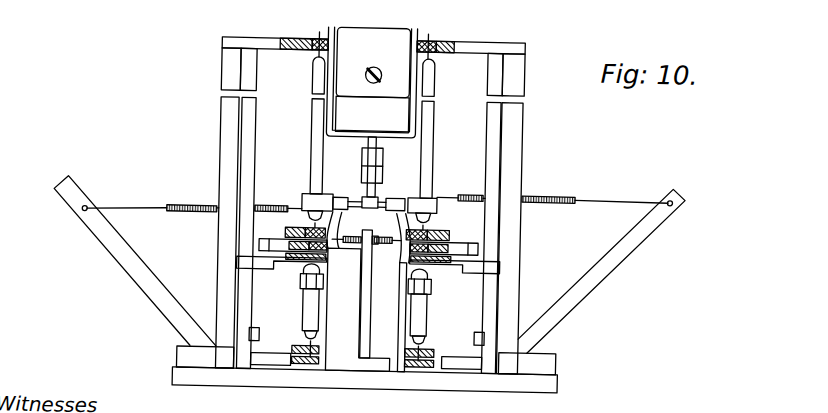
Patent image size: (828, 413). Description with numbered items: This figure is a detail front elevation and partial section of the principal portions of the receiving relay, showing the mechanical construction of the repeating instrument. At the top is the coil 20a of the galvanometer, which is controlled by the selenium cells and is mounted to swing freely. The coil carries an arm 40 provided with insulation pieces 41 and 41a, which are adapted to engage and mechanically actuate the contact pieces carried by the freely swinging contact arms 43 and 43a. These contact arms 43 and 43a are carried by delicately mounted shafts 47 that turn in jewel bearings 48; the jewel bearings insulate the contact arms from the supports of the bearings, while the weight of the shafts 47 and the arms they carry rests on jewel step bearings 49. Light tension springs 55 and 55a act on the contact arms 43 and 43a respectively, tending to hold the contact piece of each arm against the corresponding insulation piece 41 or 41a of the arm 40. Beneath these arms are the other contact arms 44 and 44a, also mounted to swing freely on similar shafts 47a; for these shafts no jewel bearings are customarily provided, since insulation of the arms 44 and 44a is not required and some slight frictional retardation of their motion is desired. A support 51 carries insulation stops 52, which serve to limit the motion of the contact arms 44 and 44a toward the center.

The coil of the galvanometer 20a is at (401, 34).
The jewel bearings 48 is at (313, 40).
The shafts 47 is at (311, 131).
The shafts 47a is at (430, 174).
The arm 40 is at (360, 150).
The insulation piece 41 is at (358, 199).
The insulation piece 41a is at (379, 199).
The contact arm 43 is at (342, 198).
The contact arm 43a is at (392, 198).
The tension spring 55a is at (200, 210).
The tension spring 55 is at (550, 193).
The jewel step bearings 49 is at (262, 244).
The insulation stops 52 is at (382, 236).
The contact arm 44 is at (327, 249).
The contact arm 44a is at (402, 267).
The support 51 is at (365, 317).